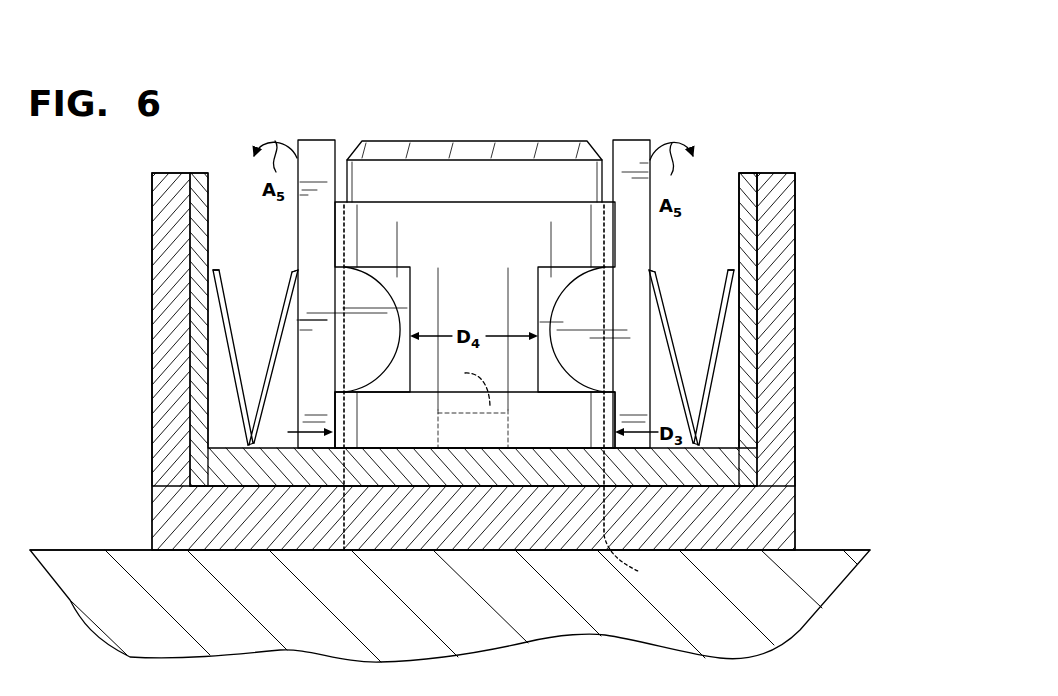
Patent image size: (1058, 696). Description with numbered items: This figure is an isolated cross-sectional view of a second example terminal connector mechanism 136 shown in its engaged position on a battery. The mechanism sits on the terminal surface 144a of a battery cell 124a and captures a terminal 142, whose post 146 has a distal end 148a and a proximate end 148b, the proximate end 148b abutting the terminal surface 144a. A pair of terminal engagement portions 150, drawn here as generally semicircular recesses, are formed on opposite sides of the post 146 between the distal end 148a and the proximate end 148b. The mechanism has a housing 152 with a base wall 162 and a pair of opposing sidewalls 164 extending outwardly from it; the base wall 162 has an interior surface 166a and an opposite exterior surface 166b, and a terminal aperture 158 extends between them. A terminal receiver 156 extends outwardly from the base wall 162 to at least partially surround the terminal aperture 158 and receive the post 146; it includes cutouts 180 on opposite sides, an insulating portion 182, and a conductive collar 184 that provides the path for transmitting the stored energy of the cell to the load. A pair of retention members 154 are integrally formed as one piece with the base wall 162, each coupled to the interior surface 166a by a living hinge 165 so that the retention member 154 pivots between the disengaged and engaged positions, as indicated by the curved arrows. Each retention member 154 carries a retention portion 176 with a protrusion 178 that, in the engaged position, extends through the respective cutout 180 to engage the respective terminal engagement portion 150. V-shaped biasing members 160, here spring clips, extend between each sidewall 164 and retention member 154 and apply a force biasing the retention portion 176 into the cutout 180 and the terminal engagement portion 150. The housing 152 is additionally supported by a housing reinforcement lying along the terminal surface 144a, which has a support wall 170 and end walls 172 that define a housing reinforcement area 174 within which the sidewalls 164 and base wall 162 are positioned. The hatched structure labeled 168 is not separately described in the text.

The battery cell 124a is at (790, 628).
The terminal connector mechanism 136 is at (502, 70).
The terminal 142 is at (566, 133).
The terminal surface 144a is at (853, 540).
The post 146 is at (570, 170).
The distal end 148a is at (440, 134).
The proximate end 148b is at (475, 420).
The terminal engagement portion 150 is at (408, 332).
The housing 152 is at (749, 138).
The retention member 154 is at (290, 130).
The terminal receiver 156 is at (492, 186).
The terminal aperture 158 is at (641, 561).
The biasing member 160 is at (218, 268).
The base wall 162 is at (750, 407).
The sidewall 164 is at (190, 242).
The living hinge 165 is at (307, 442).
The interior surface 166a is at (240, 443).
The exterior surface 166b is at (270, 488).
The base plate 168 is at (822, 198).
The support wall 170 is at (207, 527).
The end wall 172 is at (152, 320).
The housing reinforcement area 174 is at (226, 150).
The retention portion 176 is at (287, 333).
The protrusion 178 is at (372, 318).
The cutout 180 is at (397, 276).
The insulating portion 182 is at (522, 432).
The conductive collar 184 is at (456, 386).